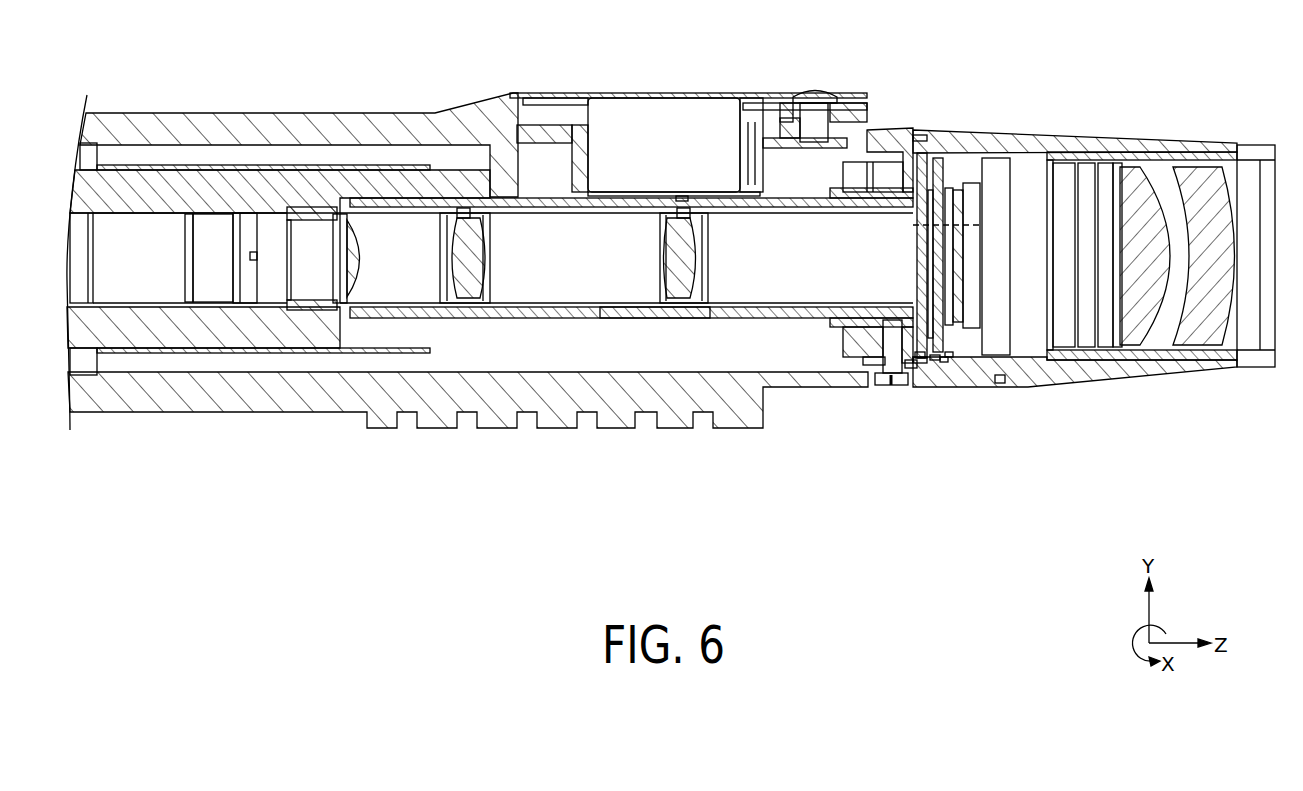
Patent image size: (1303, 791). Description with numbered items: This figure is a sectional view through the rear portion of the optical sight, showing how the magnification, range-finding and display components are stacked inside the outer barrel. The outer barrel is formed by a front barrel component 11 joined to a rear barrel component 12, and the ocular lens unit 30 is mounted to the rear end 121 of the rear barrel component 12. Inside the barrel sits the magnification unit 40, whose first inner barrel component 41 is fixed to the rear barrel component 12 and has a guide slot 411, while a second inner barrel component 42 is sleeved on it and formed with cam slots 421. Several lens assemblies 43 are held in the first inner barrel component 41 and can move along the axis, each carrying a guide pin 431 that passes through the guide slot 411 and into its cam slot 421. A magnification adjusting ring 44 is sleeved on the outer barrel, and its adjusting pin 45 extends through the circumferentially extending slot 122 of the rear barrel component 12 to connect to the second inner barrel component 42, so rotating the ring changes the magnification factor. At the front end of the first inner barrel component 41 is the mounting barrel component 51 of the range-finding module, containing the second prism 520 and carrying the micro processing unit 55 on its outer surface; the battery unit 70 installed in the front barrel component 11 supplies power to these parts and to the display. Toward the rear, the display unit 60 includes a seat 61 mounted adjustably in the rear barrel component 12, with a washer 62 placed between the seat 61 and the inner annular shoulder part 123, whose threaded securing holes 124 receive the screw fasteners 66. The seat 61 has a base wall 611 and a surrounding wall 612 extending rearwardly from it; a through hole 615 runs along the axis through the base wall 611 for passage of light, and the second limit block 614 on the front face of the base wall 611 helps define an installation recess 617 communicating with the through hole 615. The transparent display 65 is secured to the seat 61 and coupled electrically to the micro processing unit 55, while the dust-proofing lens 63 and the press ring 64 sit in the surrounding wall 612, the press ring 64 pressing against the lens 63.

The front barrel component 11 is at (205, 123).
The mounting barrel component 51 is at (153, 338).
The second prism 520 is at (205, 287).
The micro processing unit 55 is at (297, 352).
The magnification unit 40 is at (512, 328).
The first inner barrel component 41 is at (560, 312).
The second inner barrel component 42 is at (650, 314).
The lens assemblies 43 is at (470, 303).
The cam slots 421 is at (483, 200).
The guide slot 411 is at (626, 198).
The guide pin 431 is at (680, 198).
The battery unit 70 is at (602, 115).
The magnification adjusting ring 44 is at (887, 140).
The adjusting pin 45 is at (887, 372).
The circumferentially extending slot 122 is at (873, 365).
The inner annular shoulder part 123 is at (920, 360).
The threaded securing holes 124 is at (922, 135).
The seat 61 is at (948, 152).
The base wall 611 is at (920, 355).
The transparent display 65 is at (937, 152).
The surrounding wall 612 is at (963, 150).
The screw fasteners 66 is at (1020, 148).
The dust-proofing lens 63 is at (963, 267).
The press ring 64 is at (972, 305).
The display unit 60 is at (1000, 238).
The washer 62 is at (915, 368).
The second limit block 614 is at (933, 360).
The through hole 615 is at (950, 357).
The installation recess 617 is at (945, 362).
The rear barrel component 12 is at (1000, 385).
The rear end 121 is at (1000, 379).
The ocular lens unit 30 is at (1257, 133).